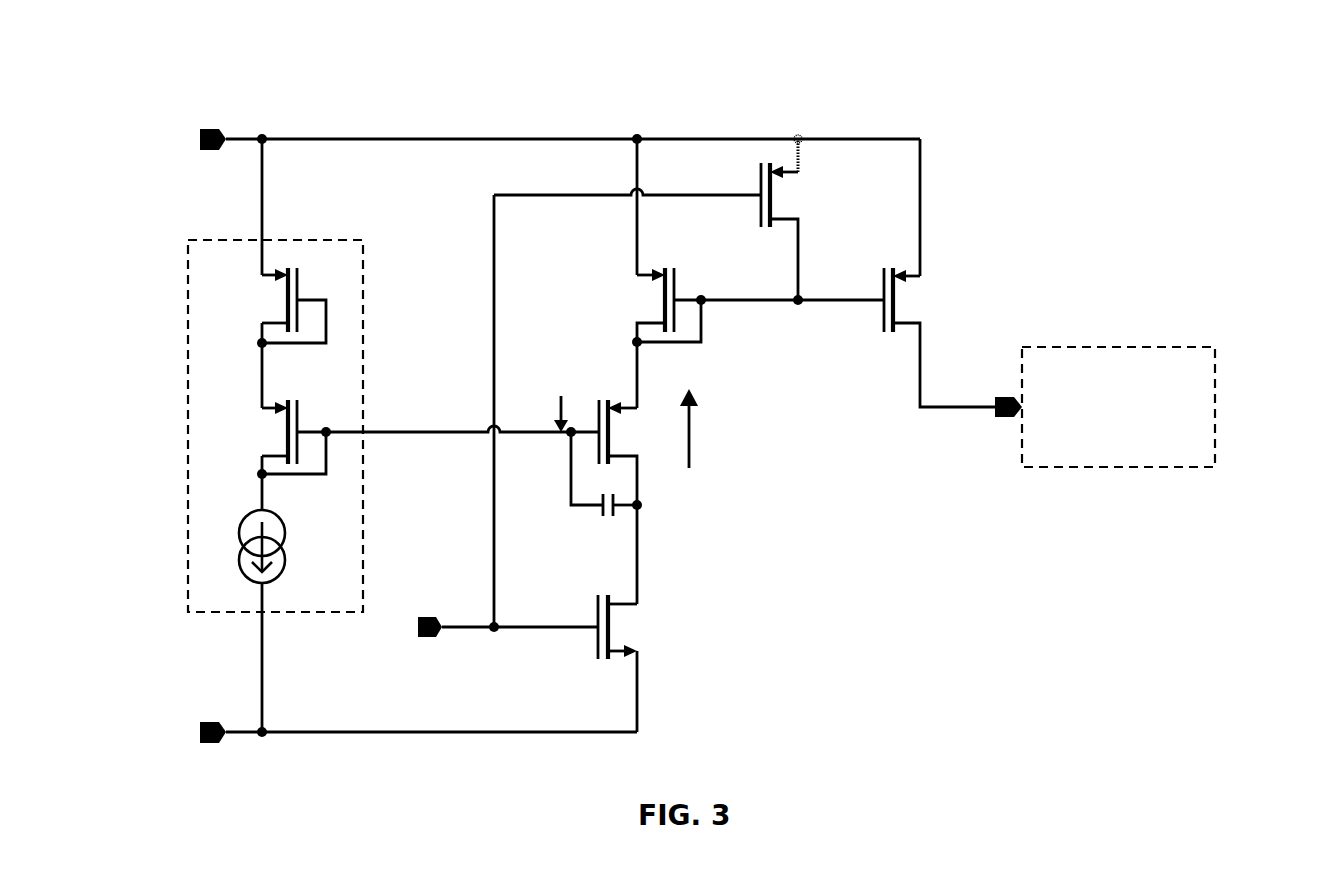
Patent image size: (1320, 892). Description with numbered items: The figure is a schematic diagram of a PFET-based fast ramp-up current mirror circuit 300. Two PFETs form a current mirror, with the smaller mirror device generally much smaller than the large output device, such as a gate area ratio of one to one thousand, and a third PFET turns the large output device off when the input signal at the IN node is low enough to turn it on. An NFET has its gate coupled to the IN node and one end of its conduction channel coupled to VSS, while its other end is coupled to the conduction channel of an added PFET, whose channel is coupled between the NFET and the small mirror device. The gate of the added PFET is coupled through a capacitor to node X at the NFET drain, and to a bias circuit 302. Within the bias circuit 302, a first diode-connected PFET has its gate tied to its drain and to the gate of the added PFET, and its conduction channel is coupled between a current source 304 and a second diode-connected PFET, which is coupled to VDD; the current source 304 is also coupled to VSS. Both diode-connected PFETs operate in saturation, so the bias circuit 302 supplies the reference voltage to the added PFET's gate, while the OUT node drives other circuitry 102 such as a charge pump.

The fast ramp-up current mirror circuit 300 is at (702, 396).
The bias circuit 302 is at (363, 240).
The current source 304 is at (287, 548).
The other circuitry (e.g., charge pump) 102 is at (1215, 393).